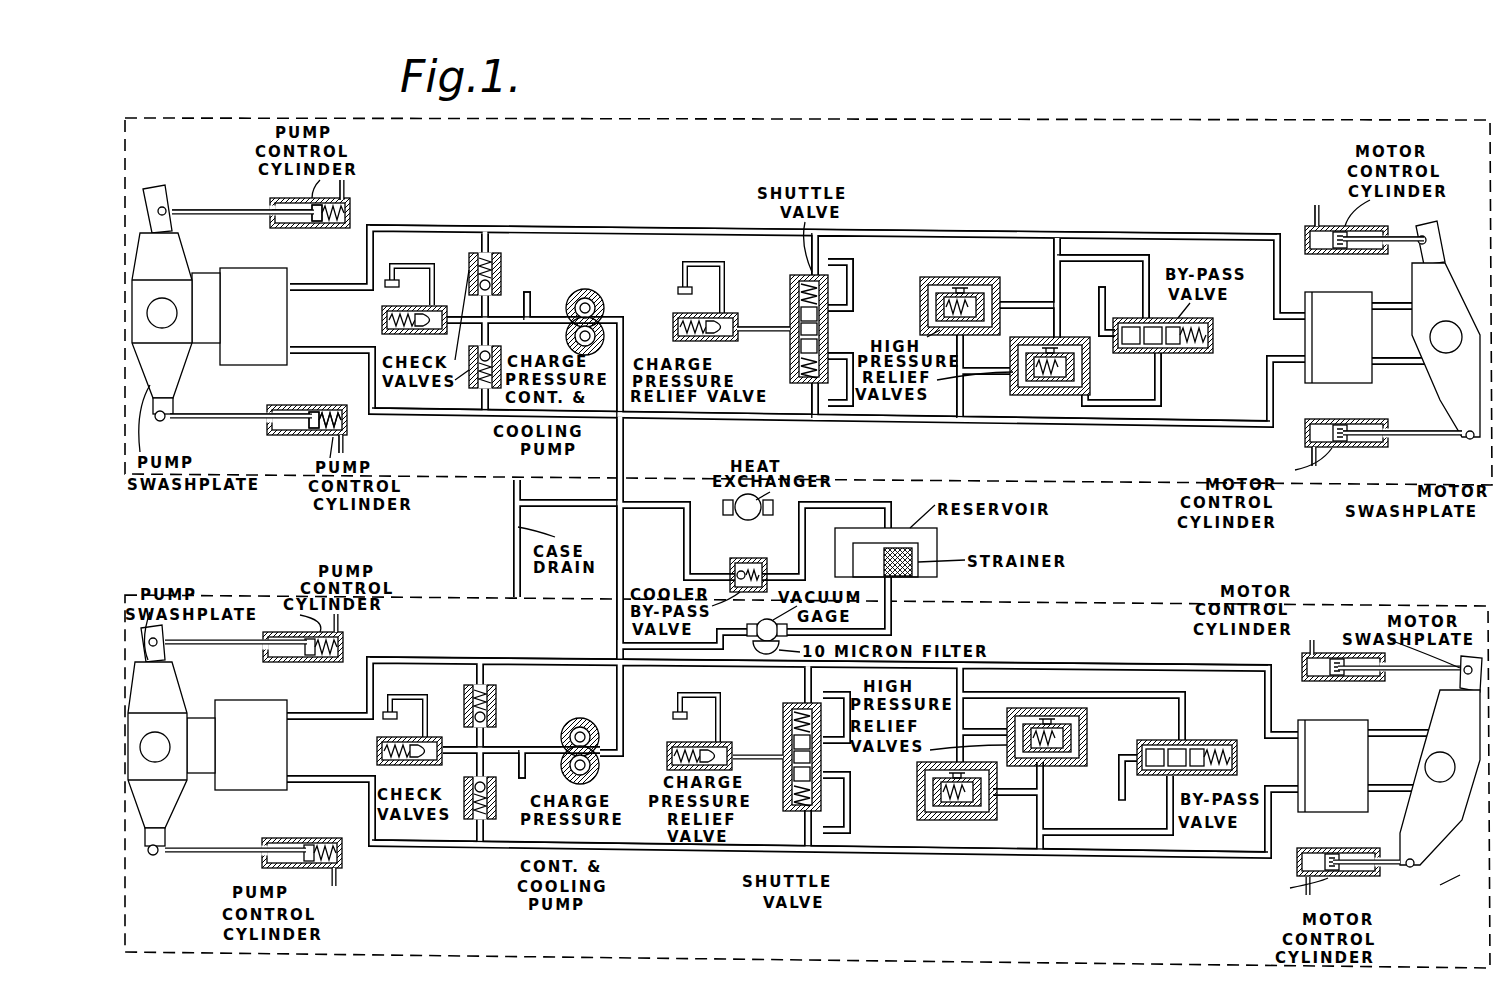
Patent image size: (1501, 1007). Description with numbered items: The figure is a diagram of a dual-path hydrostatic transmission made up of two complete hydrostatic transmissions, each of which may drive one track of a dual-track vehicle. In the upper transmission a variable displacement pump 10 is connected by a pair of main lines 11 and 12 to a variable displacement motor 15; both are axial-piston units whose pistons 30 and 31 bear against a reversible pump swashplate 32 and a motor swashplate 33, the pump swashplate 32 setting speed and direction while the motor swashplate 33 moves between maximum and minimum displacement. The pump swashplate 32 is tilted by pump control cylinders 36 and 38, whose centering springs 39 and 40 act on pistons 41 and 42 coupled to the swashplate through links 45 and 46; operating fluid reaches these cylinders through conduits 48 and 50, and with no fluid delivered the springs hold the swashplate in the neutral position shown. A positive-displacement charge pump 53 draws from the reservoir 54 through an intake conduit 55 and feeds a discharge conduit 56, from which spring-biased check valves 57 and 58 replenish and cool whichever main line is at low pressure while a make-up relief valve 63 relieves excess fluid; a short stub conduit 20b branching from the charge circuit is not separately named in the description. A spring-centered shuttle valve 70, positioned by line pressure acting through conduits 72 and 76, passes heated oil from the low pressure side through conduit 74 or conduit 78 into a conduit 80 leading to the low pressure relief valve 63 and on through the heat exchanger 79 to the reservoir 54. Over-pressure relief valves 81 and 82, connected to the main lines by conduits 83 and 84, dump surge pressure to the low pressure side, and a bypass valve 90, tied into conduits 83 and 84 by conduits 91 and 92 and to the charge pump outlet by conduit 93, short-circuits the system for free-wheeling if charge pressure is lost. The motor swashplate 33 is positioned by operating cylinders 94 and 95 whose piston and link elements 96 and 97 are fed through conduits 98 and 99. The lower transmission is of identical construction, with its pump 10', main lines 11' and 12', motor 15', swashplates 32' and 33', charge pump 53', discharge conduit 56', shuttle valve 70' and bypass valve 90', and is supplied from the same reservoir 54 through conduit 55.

The variable displacement pump 10 is at (278, 310).
The main line 11 is at (823, 218).
The main line 12 is at (821, 436).
The variable displacement motor 15 is at (1331, 323).
The charge pressure port 20b is at (527, 290).
The pump pistons 30 is at (207, 275).
The motor pistons 31 is at (1393, 297).
The pump swashplate 32 is at (172, 303).
The motor swashplate 33 is at (1446, 330).
The pump control cylinder 36 is at (352, 215).
The pump control cylinder 38 is at (350, 425).
The centering spring 39 is at (318, 226).
The centering spring 40 is at (333, 407).
The piston 41 is at (286, 226).
The piston 42 is at (302, 405).
The link 45 is at (236, 210).
The link 46 is at (217, 420).
The conduit 48 is at (348, 192).
The conduit 50 is at (333, 442).
The charge pressure pump 53 is at (609, 304).
The reservoir 54 is at (930, 537).
The intake conduit 55 is at (625, 458).
The discharge conduit 56 is at (514, 291).
The check valve 57 is at (469, 268).
The check valve 58 is at (500, 352).
The make-up (low pressure) relief valve 63 is at (380, 318).
The shuttle valve 70 is at (840, 329).
The conduit 72 is at (822, 245).
The conduit 74 is at (853, 284).
The conduit 76 is at (810, 386).
The conduit 78 is at (833, 355).
The heat exchanger 79 is at (748, 512).
The conduit 80 is at (758, 333).
The over-pressure relief valve 81 is at (978, 278).
The over-pressure relief valve 82 is at (1093, 374).
The conduit 83 is at (1058, 304).
The conduit 84 is at (957, 400).
The bypass valve 90 is at (1175, 347).
The conduit 91 is at (1143, 265).
The conduit 92 is at (1160, 404).
The conduit 93 is at (1098, 316).
The motor operating cylinder 94 is at (1306, 233).
The motor operating cylinder 95 is at (1337, 418).
The piston and link element 96 is at (1403, 233).
The piston and link element 97 is at (1412, 436).
The conduit 98 is at (1314, 206).
The conduit 99 is at (1305, 455).
The variable displacement pump 10' is at (274, 731).
The main line 11' is at (819, 652).
The main line 12' is at (820, 867).
The variable displacement motor 15' is at (1324, 752).
The pump swashplate 32' is at (179, 740).
The motor swashplate 33' is at (1429, 761).
The charge pressure pump 53' is at (577, 731).
The discharge conduit 56' is at (502, 732).
The shuttle valve 70' is at (843, 757).
The bypass valve 90' is at (1188, 737).